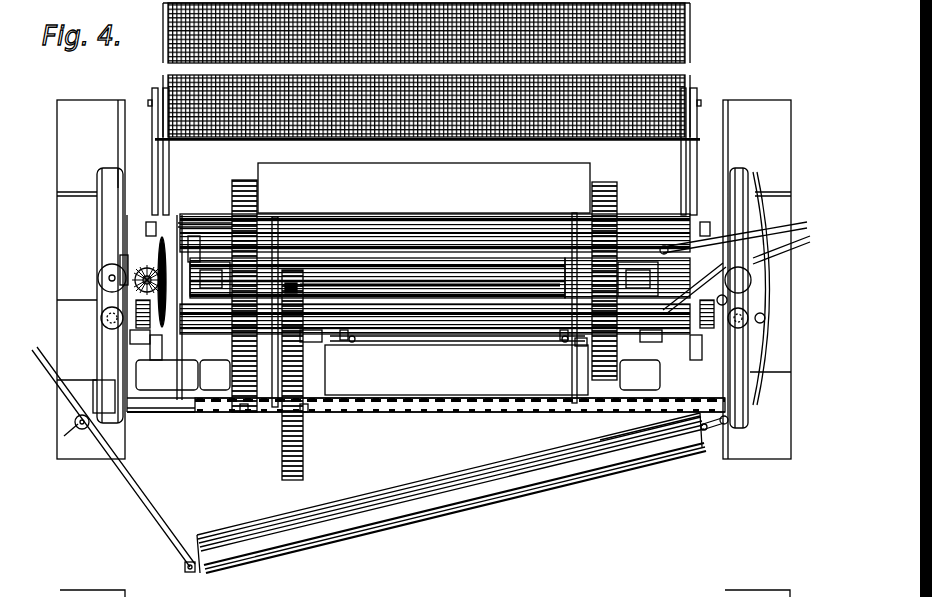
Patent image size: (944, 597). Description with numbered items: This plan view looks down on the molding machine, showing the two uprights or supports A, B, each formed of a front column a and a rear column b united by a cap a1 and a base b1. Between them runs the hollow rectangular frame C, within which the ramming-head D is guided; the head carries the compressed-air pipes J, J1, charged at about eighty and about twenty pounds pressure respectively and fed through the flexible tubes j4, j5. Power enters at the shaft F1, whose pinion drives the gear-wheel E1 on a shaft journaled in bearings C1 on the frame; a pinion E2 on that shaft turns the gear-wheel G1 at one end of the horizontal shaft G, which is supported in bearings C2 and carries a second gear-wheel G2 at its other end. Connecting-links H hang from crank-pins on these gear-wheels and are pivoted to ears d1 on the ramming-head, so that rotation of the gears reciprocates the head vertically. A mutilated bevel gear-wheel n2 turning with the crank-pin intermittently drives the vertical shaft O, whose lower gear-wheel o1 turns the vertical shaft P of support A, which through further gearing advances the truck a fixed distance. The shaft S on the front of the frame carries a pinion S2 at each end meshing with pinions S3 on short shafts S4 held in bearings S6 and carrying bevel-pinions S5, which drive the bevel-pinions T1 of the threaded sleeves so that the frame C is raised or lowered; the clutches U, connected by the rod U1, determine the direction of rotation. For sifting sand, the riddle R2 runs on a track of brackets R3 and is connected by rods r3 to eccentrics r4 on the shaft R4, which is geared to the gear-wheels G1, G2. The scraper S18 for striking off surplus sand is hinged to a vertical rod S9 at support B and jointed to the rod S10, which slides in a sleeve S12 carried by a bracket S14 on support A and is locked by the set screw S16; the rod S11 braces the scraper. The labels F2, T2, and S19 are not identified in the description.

The screen or riddle R2 is at (168, 71).
The brackets R3 is at (222, 160).
The shaft R4 is at (620, 218).
The rear leg or column b is at (422, 151).
The rods r3 is at (152, 149).
The upright or support B is at (790, 317).
The upright or support A is at (64, 329).
The rectangular box-like frame C is at (300, 175).
The compressed-air pipe J1 is at (432, 240).
The ramming-head D is at (508, 258).
The horizontal shaft G is at (430, 273).
The compressed-air pipe J is at (420, 322).
The clutches U is at (368, 342).
The rod U1 is at (500, 342).
The bearings C2 is at (573, 355).
The gear-wheel G1 is at (250, 200).
The pinion gear F2 is at (300, 475).
The shaft F1 is at (293, 270).
The connecting-link H is at (424, 279).
The ears d1 is at (208, 262).
The eccentrics r4 is at (437, 230).
The pinion E2 is at (226, 412).
The bearings C1 is at (246, 412).
The gear-wheel E1 is at (315, 434).
The front leg or column a is at (161, 415).
The cap a1 is at (110, 202).
The vertical shaft P is at (98, 278).
The vertical shaft O is at (133, 286).
The bevel-pinion T1 is at (100, 322).
The pawl disk T2 is at (756, 318).
The mutilated bevel gear-wheel n2 is at (150, 250).
The small gear-wheel o1 is at (118, 262).
The base b1 is at (411, 365).
The short shafts S4 is at (136, 320).
The bevel-pinion S5 is at (136, 340).
The pinions S3 is at (665, 350).
The bearings S6 is at (435, 360).
The pinion S2 is at (700, 390).
The shaft S is at (356, 362).
The rod S10 is at (740, 432).
The sleeve S12 is at (84, 430).
The set screw S16 is at (78, 428).
The bracket S14 is at (103, 400).
The pivot block S19 is at (197, 578).
The vertical rod S9 is at (716, 432).
The scraper S18 is at (398, 494).
The rod S11 is at (455, 508).
The gear-wheel G2 is at (650, 431).
The flexible tube j5 is at (806, 226).
The flexible tube j4 is at (803, 247).